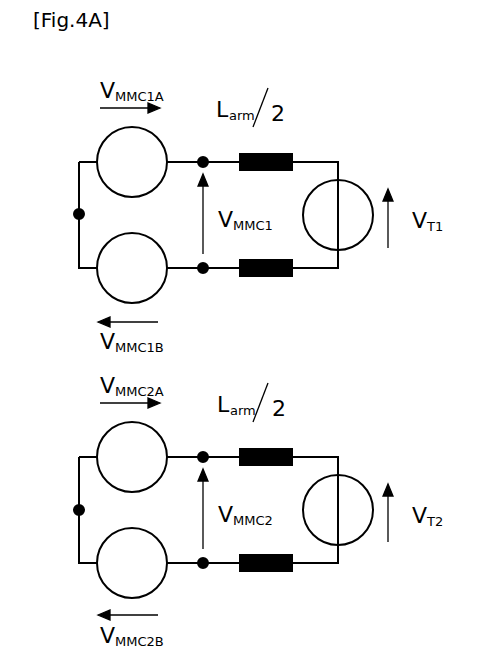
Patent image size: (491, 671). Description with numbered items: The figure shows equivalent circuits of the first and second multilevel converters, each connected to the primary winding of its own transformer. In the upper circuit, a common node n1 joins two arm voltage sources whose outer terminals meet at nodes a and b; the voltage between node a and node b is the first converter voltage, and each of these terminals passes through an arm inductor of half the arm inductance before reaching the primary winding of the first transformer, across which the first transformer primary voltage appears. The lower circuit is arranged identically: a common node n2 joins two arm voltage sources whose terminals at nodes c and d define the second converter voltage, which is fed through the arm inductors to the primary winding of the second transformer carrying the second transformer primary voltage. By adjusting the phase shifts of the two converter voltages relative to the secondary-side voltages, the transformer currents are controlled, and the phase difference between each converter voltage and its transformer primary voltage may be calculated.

The node n1 of first MMC n1 is at (65, 216).
The node a is at (202, 149).
The node b is at (202, 283).
The node n2 of second MMC n2 is at (65, 512).
The node c is at (202, 444).
The node d is at (202, 578).